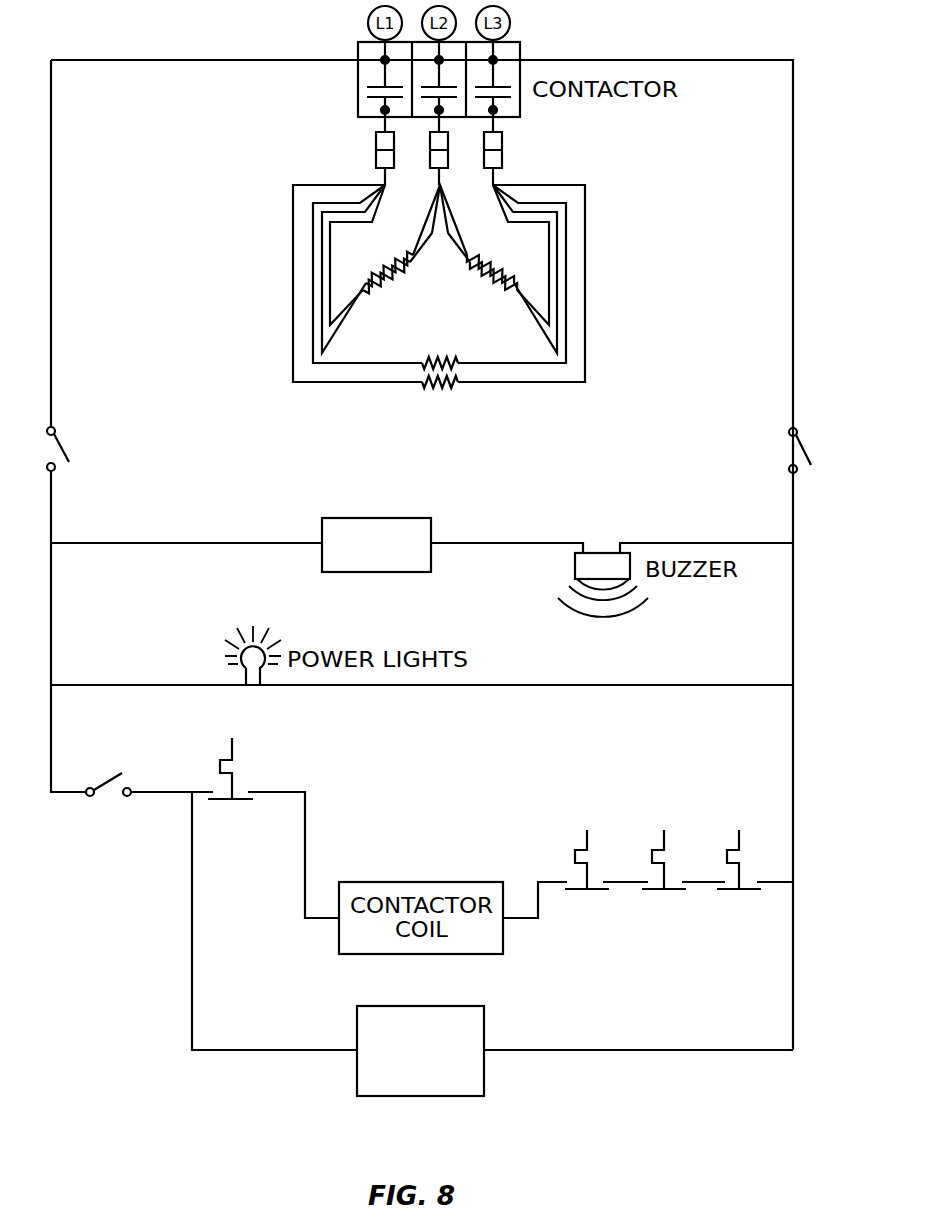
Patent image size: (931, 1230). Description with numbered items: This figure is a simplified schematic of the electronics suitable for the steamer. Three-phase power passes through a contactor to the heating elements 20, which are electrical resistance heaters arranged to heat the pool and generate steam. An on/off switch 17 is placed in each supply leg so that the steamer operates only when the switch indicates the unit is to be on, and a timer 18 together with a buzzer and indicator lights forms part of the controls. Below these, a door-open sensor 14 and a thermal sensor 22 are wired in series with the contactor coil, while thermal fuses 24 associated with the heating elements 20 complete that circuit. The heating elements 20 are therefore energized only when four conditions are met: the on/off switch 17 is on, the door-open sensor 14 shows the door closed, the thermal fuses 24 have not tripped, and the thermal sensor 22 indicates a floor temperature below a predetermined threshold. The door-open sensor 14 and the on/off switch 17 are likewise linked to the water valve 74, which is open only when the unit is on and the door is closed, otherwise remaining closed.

The heating element 20 is at (598, 281).
The on/off switch 17 is at (57, 441).
The timer 18 is at (400, 518).
The door-open sensor 14 is at (105, 784).
The thermal sensor 22 is at (232, 746).
The thermal fuse 24 is at (739, 830).
The water valve 74 is at (485, 1025).